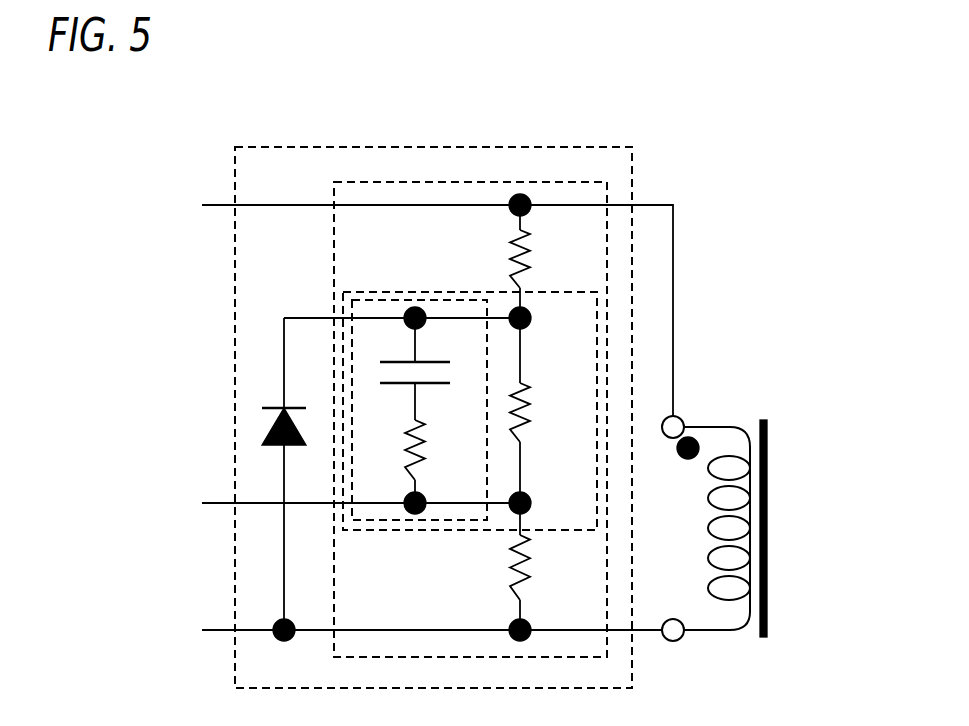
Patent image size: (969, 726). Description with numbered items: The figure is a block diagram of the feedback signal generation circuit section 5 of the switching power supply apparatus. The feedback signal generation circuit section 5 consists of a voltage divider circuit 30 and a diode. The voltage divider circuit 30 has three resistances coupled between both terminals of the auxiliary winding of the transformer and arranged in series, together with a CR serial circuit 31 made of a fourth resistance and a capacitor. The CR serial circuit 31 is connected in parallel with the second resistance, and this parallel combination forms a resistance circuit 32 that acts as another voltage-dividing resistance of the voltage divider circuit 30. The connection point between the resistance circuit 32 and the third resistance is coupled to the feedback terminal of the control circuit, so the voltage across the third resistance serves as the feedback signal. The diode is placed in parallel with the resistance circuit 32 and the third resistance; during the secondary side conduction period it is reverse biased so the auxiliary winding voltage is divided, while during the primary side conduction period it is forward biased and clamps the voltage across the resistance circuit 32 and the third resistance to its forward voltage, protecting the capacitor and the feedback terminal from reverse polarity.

The feedback signal generation circuit section 5 is at (296, 141).
The voltage divider circuit 30 is at (391, 174).
The CR serial circuit 31 is at (393, 299).
The resistance circuit 32 is at (466, 531).